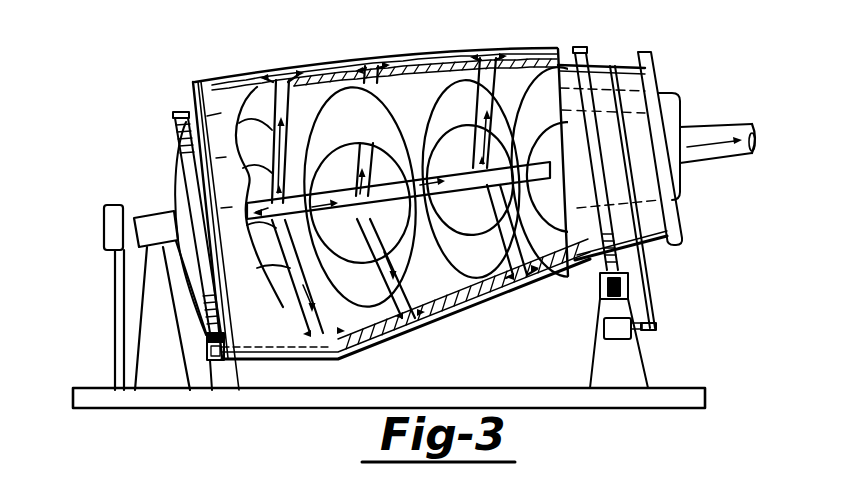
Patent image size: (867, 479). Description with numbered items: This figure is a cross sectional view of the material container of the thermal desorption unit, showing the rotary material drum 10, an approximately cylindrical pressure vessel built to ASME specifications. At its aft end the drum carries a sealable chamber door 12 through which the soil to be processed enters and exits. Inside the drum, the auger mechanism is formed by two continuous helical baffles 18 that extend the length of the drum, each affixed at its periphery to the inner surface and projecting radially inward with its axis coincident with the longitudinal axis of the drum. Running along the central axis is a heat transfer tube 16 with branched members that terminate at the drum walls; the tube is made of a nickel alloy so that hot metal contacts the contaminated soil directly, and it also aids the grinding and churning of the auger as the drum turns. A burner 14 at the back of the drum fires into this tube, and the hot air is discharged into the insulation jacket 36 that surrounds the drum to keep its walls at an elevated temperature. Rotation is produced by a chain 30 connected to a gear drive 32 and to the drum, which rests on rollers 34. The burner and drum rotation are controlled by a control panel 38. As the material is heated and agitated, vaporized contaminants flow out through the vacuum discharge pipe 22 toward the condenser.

The rotary material drum 10 is at (598, 48).
The sealable chamber door 12 is at (646, 52).
The burner 14 is at (153, 218).
The heat transfer tubes 16 is at (307, 75).
The helical baffles 18 is at (428, 112).
The vacuum discharge pipe 22 is at (720, 123).
The chain drive 30 is at (652, 300).
The gear drive 32 is at (604, 332).
The rollers 34 is at (206, 338).
The insulation jacket 36 is at (233, 74).
The control panel 38 is at (108, 220).